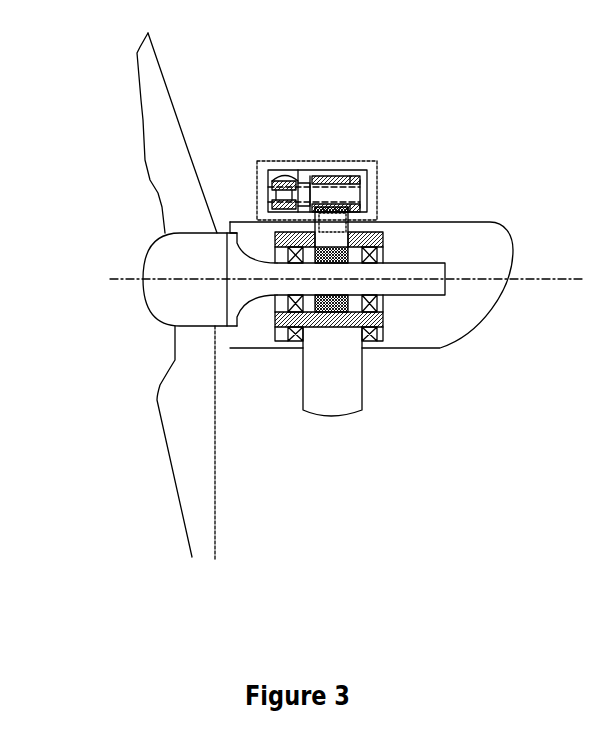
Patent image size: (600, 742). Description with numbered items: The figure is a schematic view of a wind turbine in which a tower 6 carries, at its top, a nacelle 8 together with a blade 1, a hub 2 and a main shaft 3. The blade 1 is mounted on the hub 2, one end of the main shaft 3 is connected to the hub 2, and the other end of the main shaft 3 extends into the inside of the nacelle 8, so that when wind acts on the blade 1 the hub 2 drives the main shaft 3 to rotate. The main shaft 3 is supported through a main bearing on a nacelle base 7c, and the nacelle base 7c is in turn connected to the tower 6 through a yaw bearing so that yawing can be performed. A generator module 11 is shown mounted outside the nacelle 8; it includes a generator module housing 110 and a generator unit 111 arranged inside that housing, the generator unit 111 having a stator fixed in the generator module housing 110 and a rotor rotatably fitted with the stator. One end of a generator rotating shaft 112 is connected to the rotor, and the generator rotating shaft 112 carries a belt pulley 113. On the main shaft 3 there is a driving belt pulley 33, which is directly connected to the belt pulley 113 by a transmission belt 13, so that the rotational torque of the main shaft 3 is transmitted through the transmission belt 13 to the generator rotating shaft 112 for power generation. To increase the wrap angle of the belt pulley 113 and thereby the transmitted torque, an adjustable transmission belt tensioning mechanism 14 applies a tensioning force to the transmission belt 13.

The blade 1 is at (193, 193).
The hub 2 is at (187, 300).
The main shaft 3 is at (245, 270).
The tower 6 is at (337, 395).
The nacelle base 7c is at (291, 342).
The nacelle 8 is at (437, 325).
The generator module 11 is at (378, 160).
The generator module housing 110 is at (300, 172).
The generator unit 111 is at (268, 175).
The generator rotating shaft 112 is at (309, 185).
The belt pulley 113 is at (332, 178).
The transmission belt 13 is at (349, 240).
The adjustable transmission belt tensioning mechanism 14 is at (347, 215).
The driving belt pulley 33 is at (385, 240).